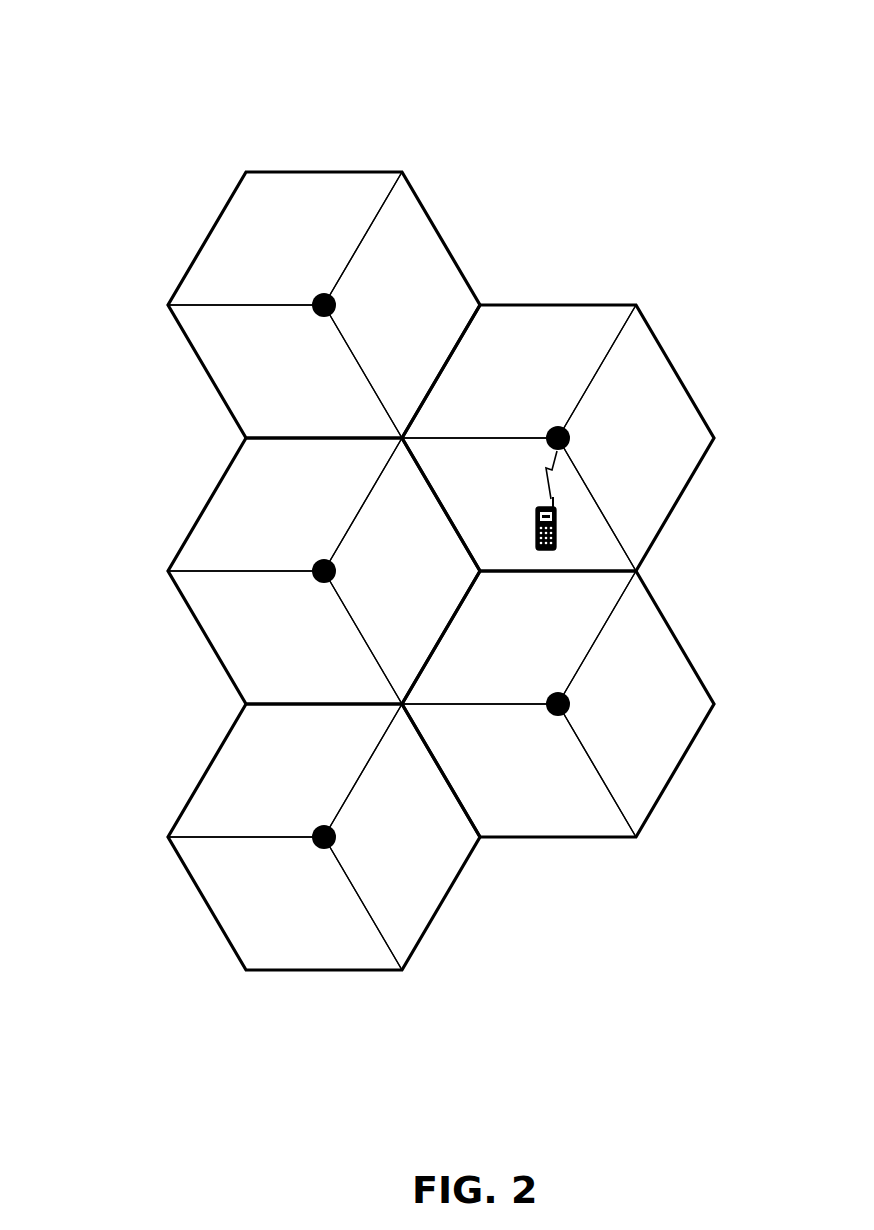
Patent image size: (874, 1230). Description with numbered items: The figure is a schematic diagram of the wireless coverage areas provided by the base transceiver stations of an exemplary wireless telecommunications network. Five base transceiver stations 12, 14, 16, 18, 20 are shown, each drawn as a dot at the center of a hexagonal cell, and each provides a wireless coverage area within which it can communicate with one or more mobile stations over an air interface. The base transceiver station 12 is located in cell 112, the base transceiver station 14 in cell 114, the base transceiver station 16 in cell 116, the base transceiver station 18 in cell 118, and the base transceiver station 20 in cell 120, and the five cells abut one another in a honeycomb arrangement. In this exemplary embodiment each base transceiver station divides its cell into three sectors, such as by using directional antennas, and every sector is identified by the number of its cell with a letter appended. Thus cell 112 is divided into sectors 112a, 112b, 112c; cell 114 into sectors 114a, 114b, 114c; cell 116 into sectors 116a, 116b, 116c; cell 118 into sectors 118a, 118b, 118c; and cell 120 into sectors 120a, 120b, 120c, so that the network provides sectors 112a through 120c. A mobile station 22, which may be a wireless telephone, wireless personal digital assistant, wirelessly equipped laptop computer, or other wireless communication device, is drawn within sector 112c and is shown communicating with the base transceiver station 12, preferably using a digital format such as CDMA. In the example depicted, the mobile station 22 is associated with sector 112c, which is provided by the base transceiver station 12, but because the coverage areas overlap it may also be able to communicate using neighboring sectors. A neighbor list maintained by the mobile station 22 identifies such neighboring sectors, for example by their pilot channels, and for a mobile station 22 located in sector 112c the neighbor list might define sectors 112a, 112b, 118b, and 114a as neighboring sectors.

The base transceiver station 12 is at (570, 438).
The base transceiver station 14 is at (558, 716).
The base transceiver station 16 is at (316, 830).
The base transceiver station 18 is at (312, 571).
The base transceiver station 20 is at (312, 305).
The mobile station 22 is at (557, 520).
The cell 112 is at (589, 393).
The sector 112a is at (498, 378).
The sector 112b is at (619, 489).
The sector 112c is at (446, 478).
The cell 114 is at (634, 744).
The sector 114a is at (497, 638).
The sector 114b is at (619, 723).
The sector 114c is at (474, 762).
The cell 116 is at (303, 888).
The sector 116a is at (264, 774).
The sector 116b is at (384, 848).
The sector 116c is at (284, 939).
The cell 118 is at (247, 538).
The sector 118a is at (278, 498).
The sector 118b is at (384, 585).
The sector 118c is at (280, 674).
The cell 120 is at (330, 235).
The sector 120a is at (283, 224).
The sector 120b is at (372, 310).
The sector 120c is at (274, 400).